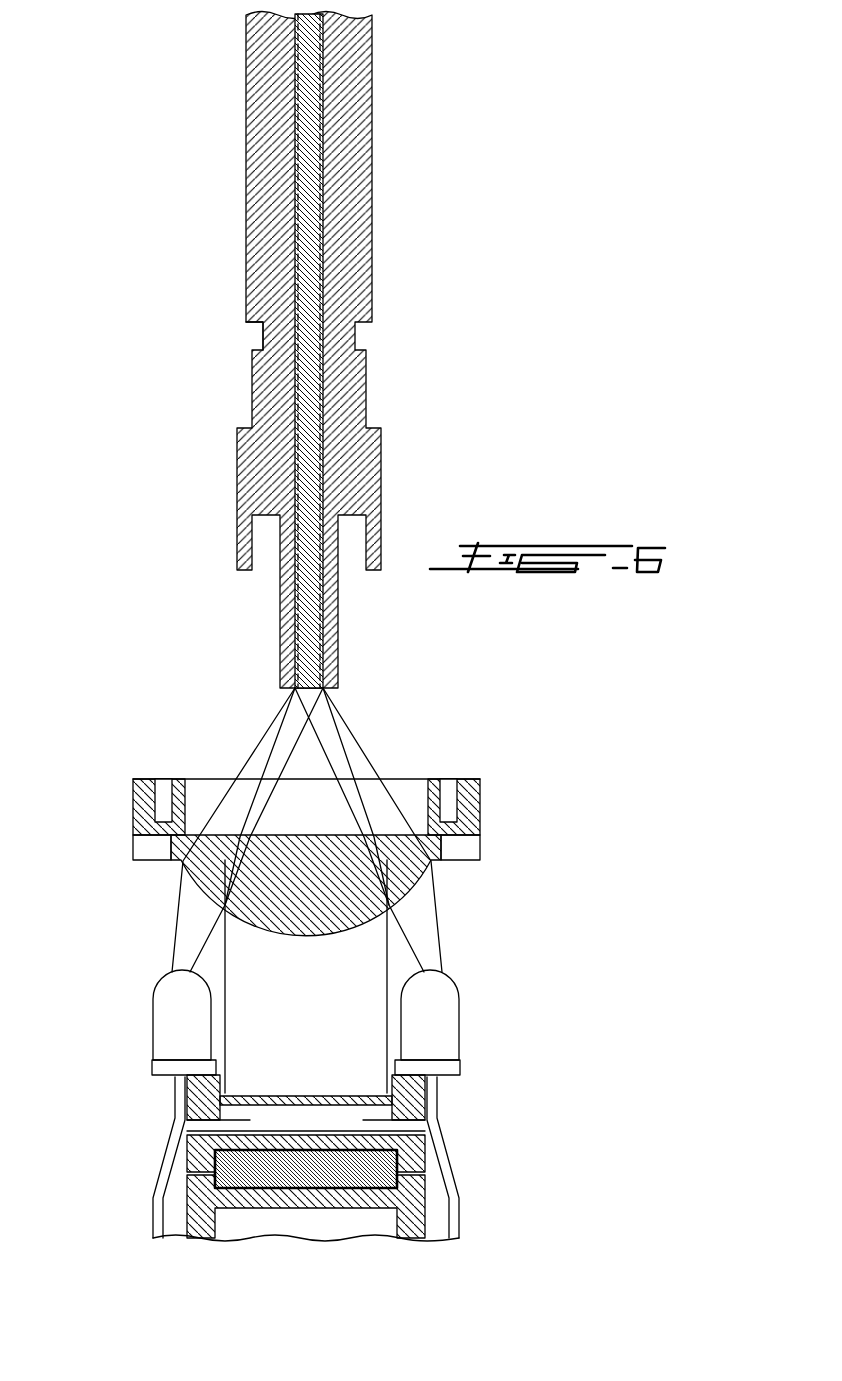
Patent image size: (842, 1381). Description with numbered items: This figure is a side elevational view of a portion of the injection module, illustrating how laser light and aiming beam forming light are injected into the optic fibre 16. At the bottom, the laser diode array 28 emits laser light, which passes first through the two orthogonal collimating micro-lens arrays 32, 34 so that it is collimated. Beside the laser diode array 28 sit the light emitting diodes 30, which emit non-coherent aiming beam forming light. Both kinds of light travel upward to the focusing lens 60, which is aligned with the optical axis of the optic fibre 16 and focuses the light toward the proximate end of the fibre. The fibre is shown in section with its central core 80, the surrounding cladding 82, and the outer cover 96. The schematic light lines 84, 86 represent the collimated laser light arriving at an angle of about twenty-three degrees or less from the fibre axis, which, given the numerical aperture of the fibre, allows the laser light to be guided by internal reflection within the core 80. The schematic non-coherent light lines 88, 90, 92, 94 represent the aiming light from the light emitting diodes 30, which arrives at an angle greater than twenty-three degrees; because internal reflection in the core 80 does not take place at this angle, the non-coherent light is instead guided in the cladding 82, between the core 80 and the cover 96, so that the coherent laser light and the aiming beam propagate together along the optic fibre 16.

The optic fibre 16 is at (345, 350).
The core 80 is at (302, 176).
The cladding 82 is at (263, 322).
The cover 96 is at (332, 351).
The schematic non-coherent light line 88 is at (262, 730).
The schematic light line 86 is at (247, 762).
The schematic light line 84 is at (317, 732).
The schematic non-coherent light line 92 is at (343, 748).
The schematic non-coherent light line 94 is at (370, 762).
The schematic non-coherent light line 90 is at (288, 752).
The focusing lens 60 is at (335, 855).
The light emitting diodes 30 is at (177, 1022).
The collimating micro-lens array 34 is at (248, 1100).
The collimating micro-lens array 32 is at (294, 1181).
The laser diode array 28 is at (320, 1170).